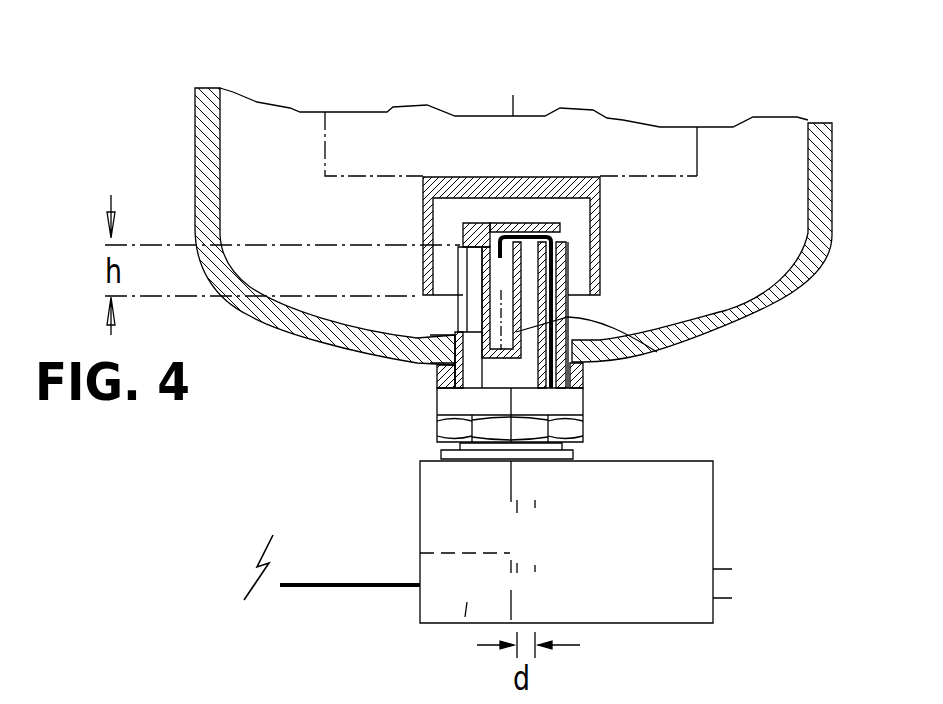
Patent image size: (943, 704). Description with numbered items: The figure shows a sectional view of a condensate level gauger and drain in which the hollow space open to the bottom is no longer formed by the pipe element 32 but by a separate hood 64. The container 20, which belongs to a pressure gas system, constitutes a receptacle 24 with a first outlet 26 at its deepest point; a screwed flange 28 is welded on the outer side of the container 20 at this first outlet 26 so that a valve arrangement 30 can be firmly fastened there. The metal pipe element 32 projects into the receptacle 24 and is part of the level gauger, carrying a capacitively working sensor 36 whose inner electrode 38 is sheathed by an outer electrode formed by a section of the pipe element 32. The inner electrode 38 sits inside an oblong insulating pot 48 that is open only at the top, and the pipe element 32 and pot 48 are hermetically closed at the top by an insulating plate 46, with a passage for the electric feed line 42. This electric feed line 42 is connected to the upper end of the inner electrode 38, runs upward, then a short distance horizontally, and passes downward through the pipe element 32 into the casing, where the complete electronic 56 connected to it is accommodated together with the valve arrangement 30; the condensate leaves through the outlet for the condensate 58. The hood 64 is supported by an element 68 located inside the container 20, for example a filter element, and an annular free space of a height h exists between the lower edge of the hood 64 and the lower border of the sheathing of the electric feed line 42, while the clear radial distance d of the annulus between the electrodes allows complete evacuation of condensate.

The container 20 is at (200, 110).
The receptacle 24 is at (265, 133).
The first outlet 26 is at (445, 338).
The screwed flange 28 is at (573, 402).
The valve arrangement 30 is at (713, 505).
The pipe element 32 is at (443, 388).
The sensor 36 is at (477, 311).
The inner electrode 38 is at (485, 222).
The electric feed line 42 is at (515, 227).
The plate 46 is at (510, 232).
The pot 48 is at (657, 352).
The electronic 56 is at (459, 632).
The outlet for the condensate 58 is at (728, 598).
The hood 64 is at (497, 272).
The element 68 is at (630, 143).